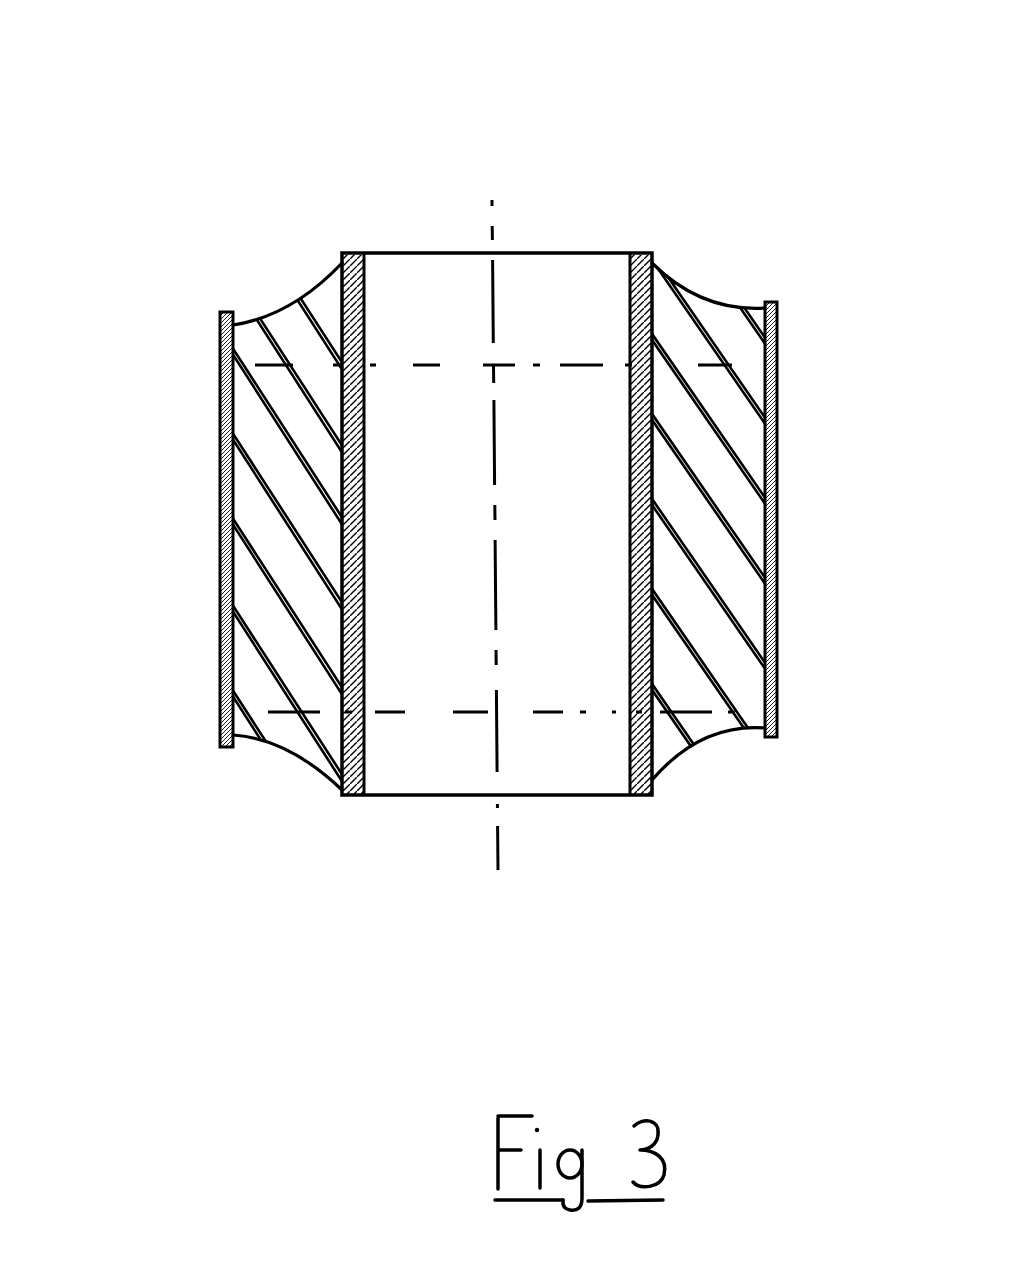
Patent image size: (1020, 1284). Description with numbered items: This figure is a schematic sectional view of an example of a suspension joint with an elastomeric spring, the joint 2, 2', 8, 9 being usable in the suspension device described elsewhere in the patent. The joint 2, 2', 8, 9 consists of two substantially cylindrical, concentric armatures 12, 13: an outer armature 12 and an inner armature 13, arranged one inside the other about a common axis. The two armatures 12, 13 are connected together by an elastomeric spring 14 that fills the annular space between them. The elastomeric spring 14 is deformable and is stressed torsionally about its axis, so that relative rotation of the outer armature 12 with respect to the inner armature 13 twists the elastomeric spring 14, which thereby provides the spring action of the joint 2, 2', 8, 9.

The joint 2 is at (479, 438).
The joint 2' is at (559, 482).
The joint 8 is at (559, 482).
The joint 9 is at (559, 482).
The armature 12 is at (766, 300).
The armature 13 is at (637, 256).
The elastomeric spring 14 is at (692, 298).